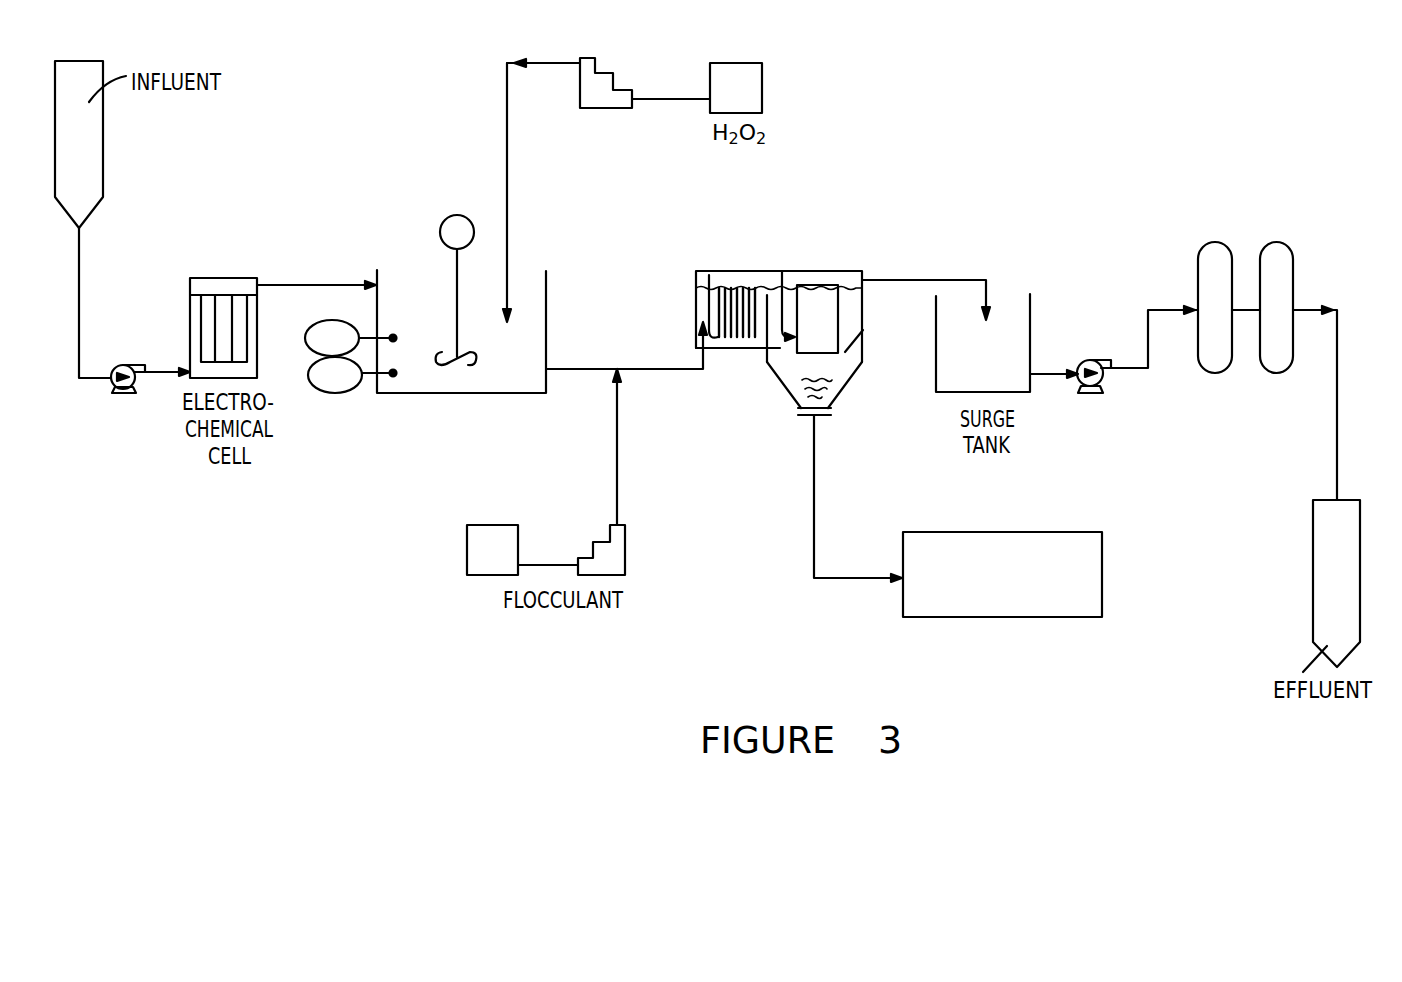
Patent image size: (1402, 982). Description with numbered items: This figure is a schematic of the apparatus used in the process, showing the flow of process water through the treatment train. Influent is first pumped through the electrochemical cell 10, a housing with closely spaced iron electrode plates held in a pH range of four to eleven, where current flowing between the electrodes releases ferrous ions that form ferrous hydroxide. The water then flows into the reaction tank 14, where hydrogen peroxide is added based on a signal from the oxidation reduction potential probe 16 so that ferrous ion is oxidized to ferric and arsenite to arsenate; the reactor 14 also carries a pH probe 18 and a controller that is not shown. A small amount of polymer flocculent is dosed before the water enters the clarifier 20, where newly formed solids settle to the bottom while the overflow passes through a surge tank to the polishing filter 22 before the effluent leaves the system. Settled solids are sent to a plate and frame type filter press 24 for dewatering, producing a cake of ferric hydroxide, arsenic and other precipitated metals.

The electrochemical cell 10 is at (232, 278).
The reaction tank 14 is at (408, 396).
The oxidation reduction potential probe 16 is at (345, 393).
The pH probe 18 is at (320, 327).
The clarifier 20 is at (853, 270).
The polishing filter 22 is at (1290, 230).
The filter press 24 is at (1122, 552).